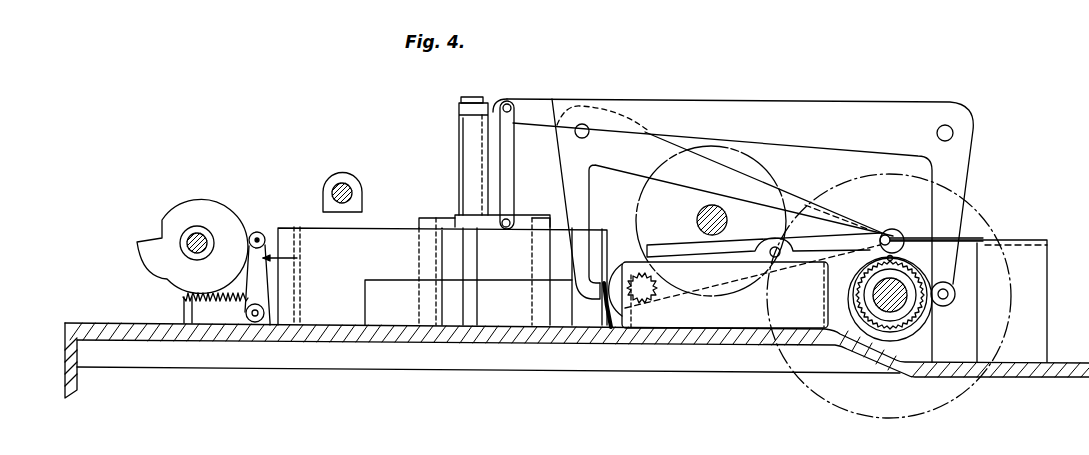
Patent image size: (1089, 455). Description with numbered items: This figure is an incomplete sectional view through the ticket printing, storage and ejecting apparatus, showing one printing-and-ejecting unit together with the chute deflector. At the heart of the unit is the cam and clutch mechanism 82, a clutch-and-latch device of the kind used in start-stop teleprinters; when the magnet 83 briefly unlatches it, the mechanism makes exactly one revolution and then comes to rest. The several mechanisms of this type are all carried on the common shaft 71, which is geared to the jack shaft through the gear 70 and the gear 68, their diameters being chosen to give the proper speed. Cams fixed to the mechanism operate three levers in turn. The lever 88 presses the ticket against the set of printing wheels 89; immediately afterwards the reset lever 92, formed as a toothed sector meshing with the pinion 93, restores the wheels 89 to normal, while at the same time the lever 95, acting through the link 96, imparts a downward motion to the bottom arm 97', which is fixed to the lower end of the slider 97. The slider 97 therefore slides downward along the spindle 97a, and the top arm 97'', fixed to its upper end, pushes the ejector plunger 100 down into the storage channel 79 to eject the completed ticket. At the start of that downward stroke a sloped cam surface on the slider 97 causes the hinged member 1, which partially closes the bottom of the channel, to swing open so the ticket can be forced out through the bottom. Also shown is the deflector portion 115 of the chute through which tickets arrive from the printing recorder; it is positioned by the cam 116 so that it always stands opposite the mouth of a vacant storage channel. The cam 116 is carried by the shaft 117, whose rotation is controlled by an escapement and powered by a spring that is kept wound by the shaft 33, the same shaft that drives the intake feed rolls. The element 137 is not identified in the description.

The hinged member 1 is at (374, 279).
The shaft 33 is at (345, 186).
The gear 68 is at (645, 193).
The gear 70 is at (897, 413).
The common shaft 71 is at (883, 305).
The storage channel 79 is at (370, 238).
The cam and clutch mechanism 82 is at (927, 329).
The magnet 83 is at (1037, 287).
The lever 88 is at (795, 207).
The printing wheels 89 is at (652, 318).
The reset lever 92 is at (693, 277).
The pinion 93 is at (630, 330).
The lever 95 is at (690, 122).
The link 96 is at (505, 167).
The slider 97 is at (449, 159).
The spindle 97a is at (473, 97).
The bottom arm 97' is at (502, 238).
The top arm 97'' is at (525, 85).
The ejector plunger 100 is at (482, 183).
The deflector portion 115 is at (296, 226).
The cam 116 is at (205, 207).
The shaft 117 is at (190, 236).
The stop pawl 137 is at (601, 340).